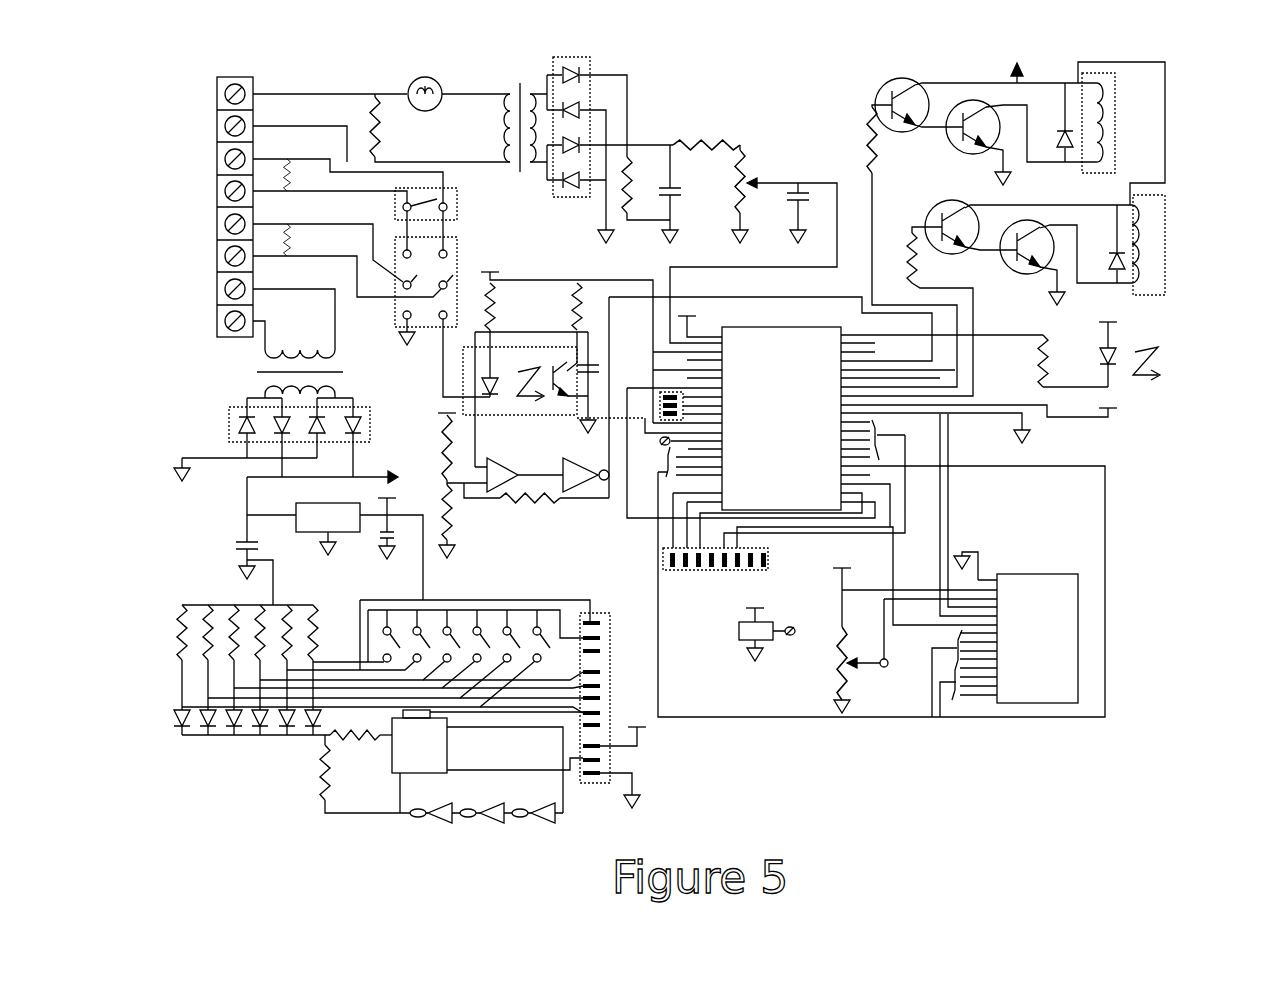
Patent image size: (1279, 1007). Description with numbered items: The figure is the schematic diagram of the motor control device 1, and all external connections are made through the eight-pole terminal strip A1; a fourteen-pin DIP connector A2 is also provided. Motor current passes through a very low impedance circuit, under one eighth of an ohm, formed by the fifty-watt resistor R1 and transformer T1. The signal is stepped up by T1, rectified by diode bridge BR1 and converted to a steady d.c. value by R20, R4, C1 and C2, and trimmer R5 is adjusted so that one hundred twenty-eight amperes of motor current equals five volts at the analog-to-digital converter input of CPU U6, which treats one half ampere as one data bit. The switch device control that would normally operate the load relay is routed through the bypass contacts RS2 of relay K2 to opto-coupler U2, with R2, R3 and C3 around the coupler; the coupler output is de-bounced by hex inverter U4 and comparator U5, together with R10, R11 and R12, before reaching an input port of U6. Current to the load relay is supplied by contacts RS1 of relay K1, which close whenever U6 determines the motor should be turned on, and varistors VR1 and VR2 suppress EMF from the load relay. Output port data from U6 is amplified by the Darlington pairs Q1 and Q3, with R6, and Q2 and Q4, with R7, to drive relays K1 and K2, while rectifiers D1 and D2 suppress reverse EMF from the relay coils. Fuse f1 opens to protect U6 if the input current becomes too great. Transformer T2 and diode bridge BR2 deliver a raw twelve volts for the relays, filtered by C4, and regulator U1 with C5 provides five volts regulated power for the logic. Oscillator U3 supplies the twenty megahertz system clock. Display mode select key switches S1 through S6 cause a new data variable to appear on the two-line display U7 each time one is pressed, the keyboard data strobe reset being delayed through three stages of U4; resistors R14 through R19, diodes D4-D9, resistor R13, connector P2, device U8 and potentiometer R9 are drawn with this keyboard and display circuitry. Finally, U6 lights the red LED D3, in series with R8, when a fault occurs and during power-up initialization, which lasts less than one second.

The motor control device 1 is at (1207, 95).
The terminal strip A1 is at (226, 195).
The connector A2 is at (713, 479).
The fuse f1 is at (425, 85).
The resistor R1 is at (440, 128).
The varistor VR1 is at (303, 175).
The varistor VR2 is at (303, 240).
The relay contacts RS1 is at (440, 204).
The bypass relay contacts RS2 is at (427, 304).
The transformer T1 is at (533, 122).
The transformer T2 is at (304, 374).
The diode bridge BR1 is at (571, 118).
The diode bridge BR2 is at (286, 437).
The resistor R20 is at (646, 188).
The resistor R4 is at (706, 136).
The trimmer R5 is at (751, 194).
The capacitor C1 is at (683, 194).
The capacitor C2 is at (806, 213).
The transistor Q1 is at (979, 99).
The transistor Q2 is at (1022, 221).
The transistor Q3 is at (1020, 137).
The transistor Q4 is at (1063, 258).
The resistor R6 is at (899, 247).
The resistor R7 is at (907, 314).
The rectifier D1 is at (1058, 122).
The rectifier D2 is at (1110, 244).
The light emitting diode D3 is at (1130, 354).
The relay K1 is at (1121, 133).
The bypass relay K2 is at (1151, 254).
The resistor R2 is at (500, 340).
The resistor R3 is at (538, 375).
The capacitor C3 is at (595, 364).
The opto-coupler U2 is at (520, 379).
The comparator U5 is at (505, 472).
The hex inverter U4 is at (504, 645).
The resistor R10 is at (435, 450).
The resistor R11 is at (462, 521).
The resistor R12 is at (454, 648).
The regulator U1 is at (359, 551).
The capacitor C4 is at (244, 564).
The capacitor C5 is at (378, 528).
The resistor R14 is at (231, 632).
The resistor R19 is at (328, 632).
The diodes D4-D9 is at (241, 732).
The resistor R13 is at (361, 725).
The display mode select key switch S1 is at (397, 636).
The display mode select key switch S6 is at (546, 636).
The connector P2 is at (604, 697).
The integrated circuit U8 is at (487, 761).
The CPU U6 is at (858, 507).
The display U7 is at (960, 634).
The oscillator U3 is at (767, 627).
The resistor R8 is at (1073, 361).
The potentiometer R9 is at (863, 632).